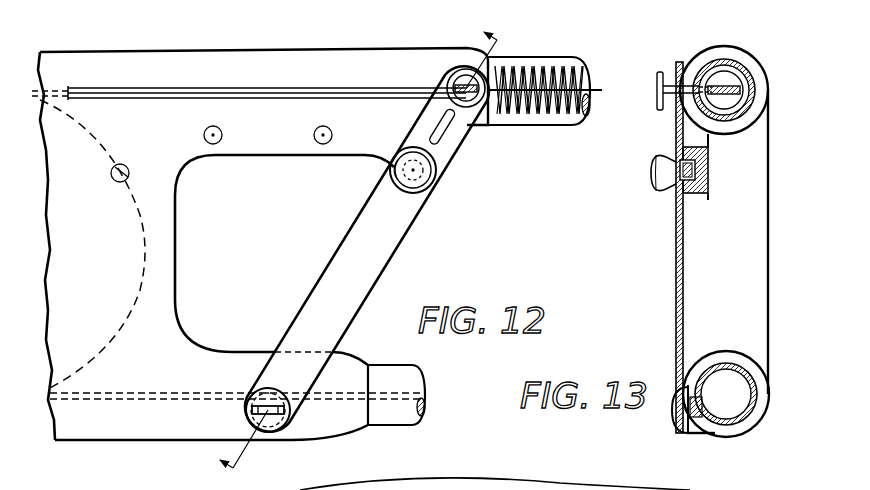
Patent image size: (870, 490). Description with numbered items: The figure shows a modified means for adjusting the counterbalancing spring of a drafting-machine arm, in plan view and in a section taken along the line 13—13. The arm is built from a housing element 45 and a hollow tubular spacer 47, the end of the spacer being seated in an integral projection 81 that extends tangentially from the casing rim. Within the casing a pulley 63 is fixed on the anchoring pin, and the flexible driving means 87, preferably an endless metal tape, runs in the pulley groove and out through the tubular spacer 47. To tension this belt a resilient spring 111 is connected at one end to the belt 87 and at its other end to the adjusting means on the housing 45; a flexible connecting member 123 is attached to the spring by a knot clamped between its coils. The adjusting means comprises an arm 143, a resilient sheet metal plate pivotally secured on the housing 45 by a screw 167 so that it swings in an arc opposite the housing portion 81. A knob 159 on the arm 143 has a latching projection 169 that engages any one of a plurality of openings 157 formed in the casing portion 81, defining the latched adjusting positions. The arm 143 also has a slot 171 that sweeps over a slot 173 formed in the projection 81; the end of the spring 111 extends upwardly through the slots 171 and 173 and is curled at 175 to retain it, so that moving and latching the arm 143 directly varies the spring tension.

In FIG. 12, the section line 13— 13 is at (372, 242).
In FIG. 12, the housing element 45 is at (163, 255).
In FIG. 13, the housing element 45 is at (745, 262).
In FIG. 12, the tubular spacer 47 is at (395, 380).
In FIG. 13, the tubular spacer 47 is at (755, 97).
In FIG. 12, the pulley 63 is at (148, 282).
In FIG. 12, the projection 81 is at (364, 58).
In FIG. 13, the projection 81 is at (750, 118).
In FIG. 12, the flexible driving means 87 is at (166, 95).
In FIG. 13, the flexible driving means 87 is at (722, 86).
In FIG. 12, the resilient spring 111 is at (554, 63).
In FIG. 13, the resilient spring 111 is at (731, 72).
In FIG. 13, the flexible connecting member 123 is at (722, 489).
In FIG. 12, the arm 143 is at (382, 245).
In FIG. 13, the arm 143 is at (680, 277).
In FIG. 12, the openings 157 is at (318, 143).
In FIG. 13, the openings 157 is at (703, 175).
In FIG. 12, the knob 159 is at (417, 197).
In FIG. 13, the knob 159 is at (655, 182).
In FIG. 12, the screw 167 is at (280, 430).
In FIG. 13, the screw 167 is at (673, 413).
In FIG. 13, the latching projection 169 is at (697, 168).
In FIG. 12, the slot 171 is at (443, 133).
In FIG. 12, the slot 173 is at (248, 88).
In FIG. 12, the curled end 175 is at (452, 65).
In FIG. 13, the curled end 175 is at (664, 90).